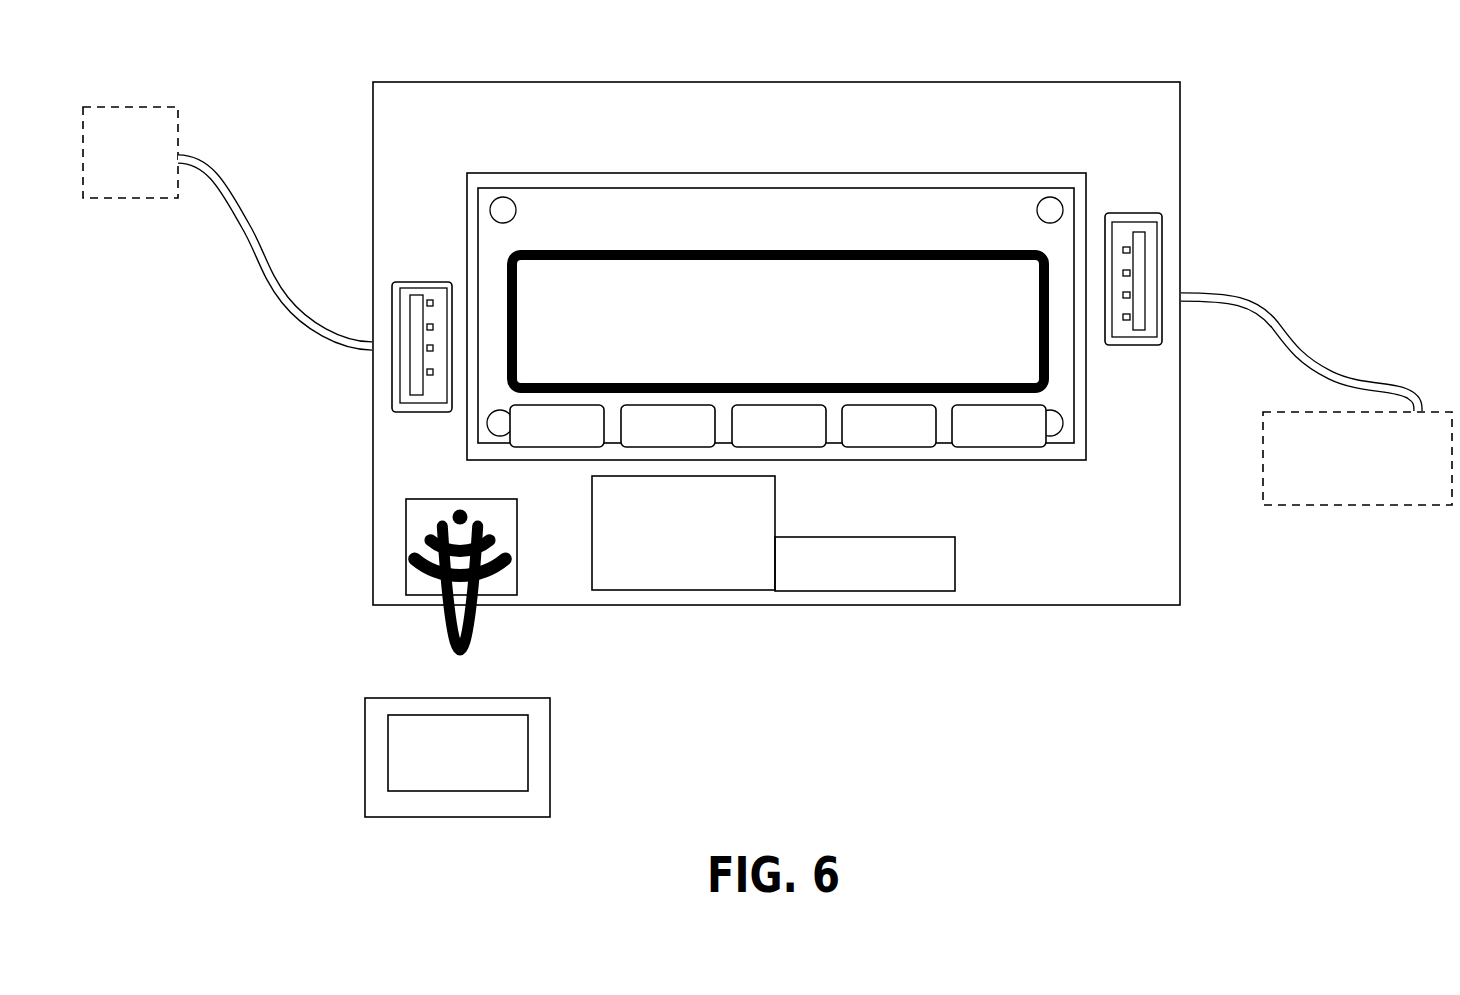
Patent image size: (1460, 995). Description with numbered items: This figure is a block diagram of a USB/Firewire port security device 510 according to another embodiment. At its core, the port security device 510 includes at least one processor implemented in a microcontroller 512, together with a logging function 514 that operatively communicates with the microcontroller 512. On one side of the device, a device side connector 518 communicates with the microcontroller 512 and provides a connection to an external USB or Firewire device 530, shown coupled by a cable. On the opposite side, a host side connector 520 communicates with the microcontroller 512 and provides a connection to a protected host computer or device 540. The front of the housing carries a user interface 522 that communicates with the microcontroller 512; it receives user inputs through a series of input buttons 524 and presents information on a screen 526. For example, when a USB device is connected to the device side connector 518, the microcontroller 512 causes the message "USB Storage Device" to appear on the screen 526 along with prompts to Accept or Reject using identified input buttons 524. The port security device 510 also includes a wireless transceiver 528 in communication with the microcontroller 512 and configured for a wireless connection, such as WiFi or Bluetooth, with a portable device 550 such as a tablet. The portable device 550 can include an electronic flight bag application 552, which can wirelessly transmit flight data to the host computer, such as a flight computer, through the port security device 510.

The USB/Firewire port security device 510 is at (659, 64).
The microcontroller 512 is at (653, 591).
The logging function 514 is at (883, 592).
The device side connector 518 is at (413, 360).
The host side connector 520 is at (1140, 270).
The user interface 522 is at (963, 167).
The input buttons 524 is at (577, 448).
The screen 526 is at (933, 287).
The wireless transceiver 528 is at (406, 547).
The USB or Firewire device 530 is at (110, 105).
The protected host computer or device 540 is at (1370, 505).
The portable device 550 is at (453, 698).
The electronic flight bag application 552 is at (528, 772).